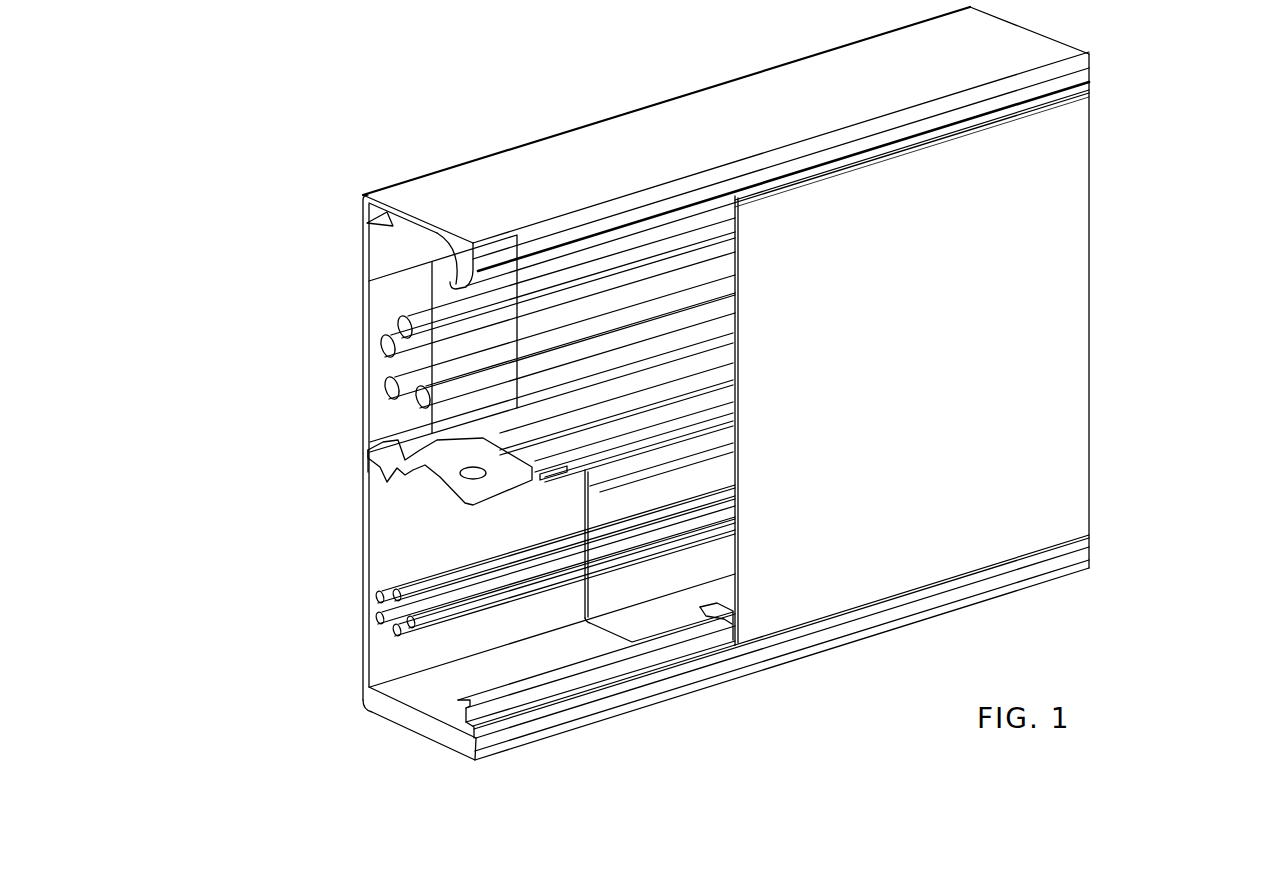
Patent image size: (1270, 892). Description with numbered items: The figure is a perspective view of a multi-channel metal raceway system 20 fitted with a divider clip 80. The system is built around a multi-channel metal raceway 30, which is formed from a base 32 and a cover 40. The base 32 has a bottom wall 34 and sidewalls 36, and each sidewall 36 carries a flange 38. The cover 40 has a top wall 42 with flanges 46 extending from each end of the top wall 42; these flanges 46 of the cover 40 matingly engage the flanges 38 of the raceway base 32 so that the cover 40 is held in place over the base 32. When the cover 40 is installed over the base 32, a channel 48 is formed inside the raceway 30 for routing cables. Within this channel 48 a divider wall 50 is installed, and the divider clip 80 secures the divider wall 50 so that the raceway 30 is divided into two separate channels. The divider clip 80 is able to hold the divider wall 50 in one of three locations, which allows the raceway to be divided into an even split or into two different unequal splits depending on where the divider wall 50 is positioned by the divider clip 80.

The multi-channel metal raceway system 20 is at (557, 115).
The multi-channel metal raceway 30 is at (343, 278).
The base 32 is at (360, 307).
The bottom wall 34 is at (360, 340).
The sidewalls 36 is at (427, 187).
The flange 38 is at (495, 256).
The cover 40 is at (1050, 243).
The top wall 42 is at (1043, 330).
The flanges 46 is at (703, 607).
The channel 48 is at (405, 542).
The divider wall 50 is at (552, 457).
The divider clip 80 is at (397, 448).